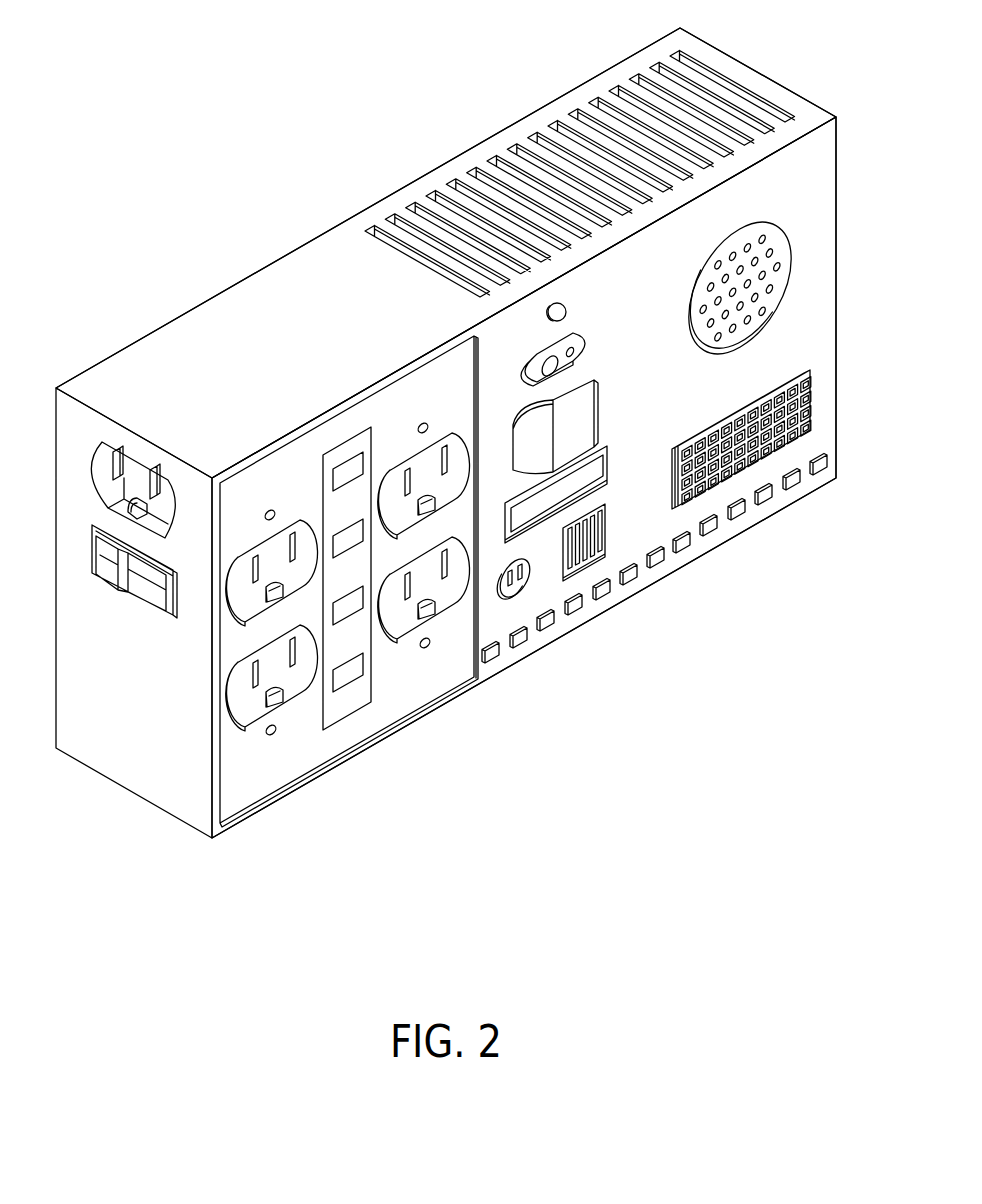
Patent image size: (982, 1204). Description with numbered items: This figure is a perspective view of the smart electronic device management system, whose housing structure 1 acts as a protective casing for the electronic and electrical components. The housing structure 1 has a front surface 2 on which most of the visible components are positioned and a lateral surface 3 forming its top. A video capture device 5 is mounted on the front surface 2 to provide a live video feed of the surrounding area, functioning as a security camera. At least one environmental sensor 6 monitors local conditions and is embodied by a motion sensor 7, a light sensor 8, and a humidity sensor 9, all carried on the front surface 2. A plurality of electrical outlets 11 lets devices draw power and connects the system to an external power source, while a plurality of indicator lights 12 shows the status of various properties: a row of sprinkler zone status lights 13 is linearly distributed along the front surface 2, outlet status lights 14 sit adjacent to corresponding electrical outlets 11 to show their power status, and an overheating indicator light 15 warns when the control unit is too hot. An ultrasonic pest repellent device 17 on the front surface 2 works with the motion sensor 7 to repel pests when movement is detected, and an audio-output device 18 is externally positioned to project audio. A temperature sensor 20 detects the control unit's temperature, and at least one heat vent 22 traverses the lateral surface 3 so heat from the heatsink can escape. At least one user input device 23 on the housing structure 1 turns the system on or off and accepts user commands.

The housing structure 1 is at (848, 348).
The front surface 2 is at (828, 149).
The lateral surface 3 is at (214, 318).
The video capture device 5 is at (582, 347).
The environmental sensor 6 is at (499, 477).
The motion sensor 7 is at (596, 415).
The light sensor 8 is at (604, 470).
The humidity sensor 9 is at (600, 535).
The electrical outlets 11 is at (270, 552).
The indicator lights 12 is at (665, 573).
The sprinkler zone status lights 13 is at (833, 462).
The outlet status lights 14 is at (425, 423).
The overheating indicator light 15 is at (560, 310).
The ultrasonic pest repellent device 17 is at (728, 418).
The audio-output device 18 is at (732, 247).
The temperature sensor 20 is at (513, 597).
The heat vent 22 is at (656, 68).
The user input device 23 is at (143, 586).